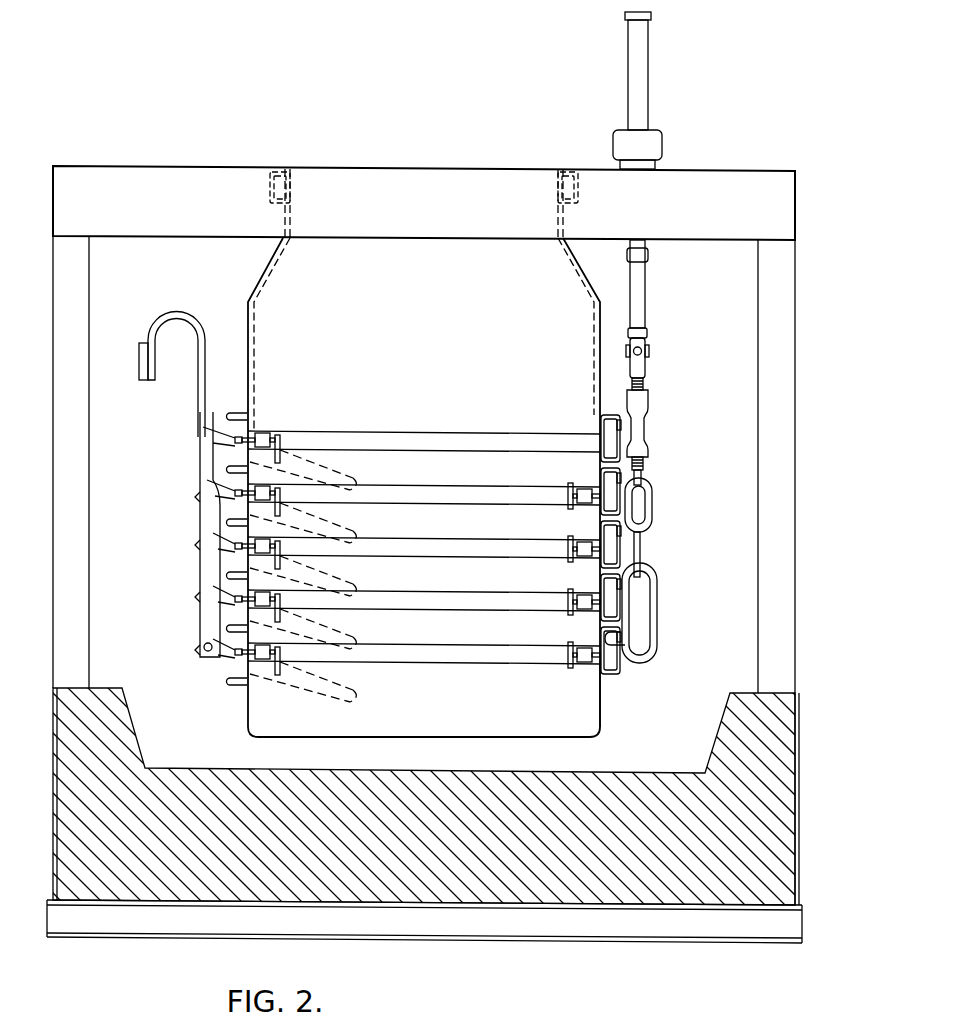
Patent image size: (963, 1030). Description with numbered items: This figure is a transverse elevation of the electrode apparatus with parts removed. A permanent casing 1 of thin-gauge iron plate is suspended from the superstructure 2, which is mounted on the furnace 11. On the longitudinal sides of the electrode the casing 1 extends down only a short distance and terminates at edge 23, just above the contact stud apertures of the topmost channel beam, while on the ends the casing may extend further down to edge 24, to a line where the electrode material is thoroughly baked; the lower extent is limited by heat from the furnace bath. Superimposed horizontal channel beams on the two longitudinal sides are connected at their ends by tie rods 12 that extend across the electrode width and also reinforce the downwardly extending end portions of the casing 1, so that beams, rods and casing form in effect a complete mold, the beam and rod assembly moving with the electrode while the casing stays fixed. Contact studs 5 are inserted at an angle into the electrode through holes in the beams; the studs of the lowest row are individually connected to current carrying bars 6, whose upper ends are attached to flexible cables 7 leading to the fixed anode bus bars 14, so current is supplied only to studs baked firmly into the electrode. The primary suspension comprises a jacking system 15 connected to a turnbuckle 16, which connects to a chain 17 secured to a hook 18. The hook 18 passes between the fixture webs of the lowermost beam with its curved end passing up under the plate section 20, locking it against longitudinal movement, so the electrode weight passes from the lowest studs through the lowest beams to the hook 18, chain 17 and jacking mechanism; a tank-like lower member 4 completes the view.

The permanent casing 1 is at (259, 281).
The superstructure 2 is at (209, 168).
The tank side wall 4 is at (588, 702).
The contact studs 5 is at (322, 690).
The current carrying bars 6 is at (199, 571).
The flexible cables 7 is at (198, 399).
The furnace 11 is at (68, 786).
The tie rods 12 is at (350, 431).
The fixed anode bus bars 14 is at (139, 363).
The jacking system 15 is at (641, 78).
The turnbuckle 16 is at (643, 437).
The chain 17 is at (652, 506).
The hook 18 is at (655, 604).
The plate section 20 is at (621, 427).
The edge 23 is at (597, 445).
The edge 24 is at (466, 680).